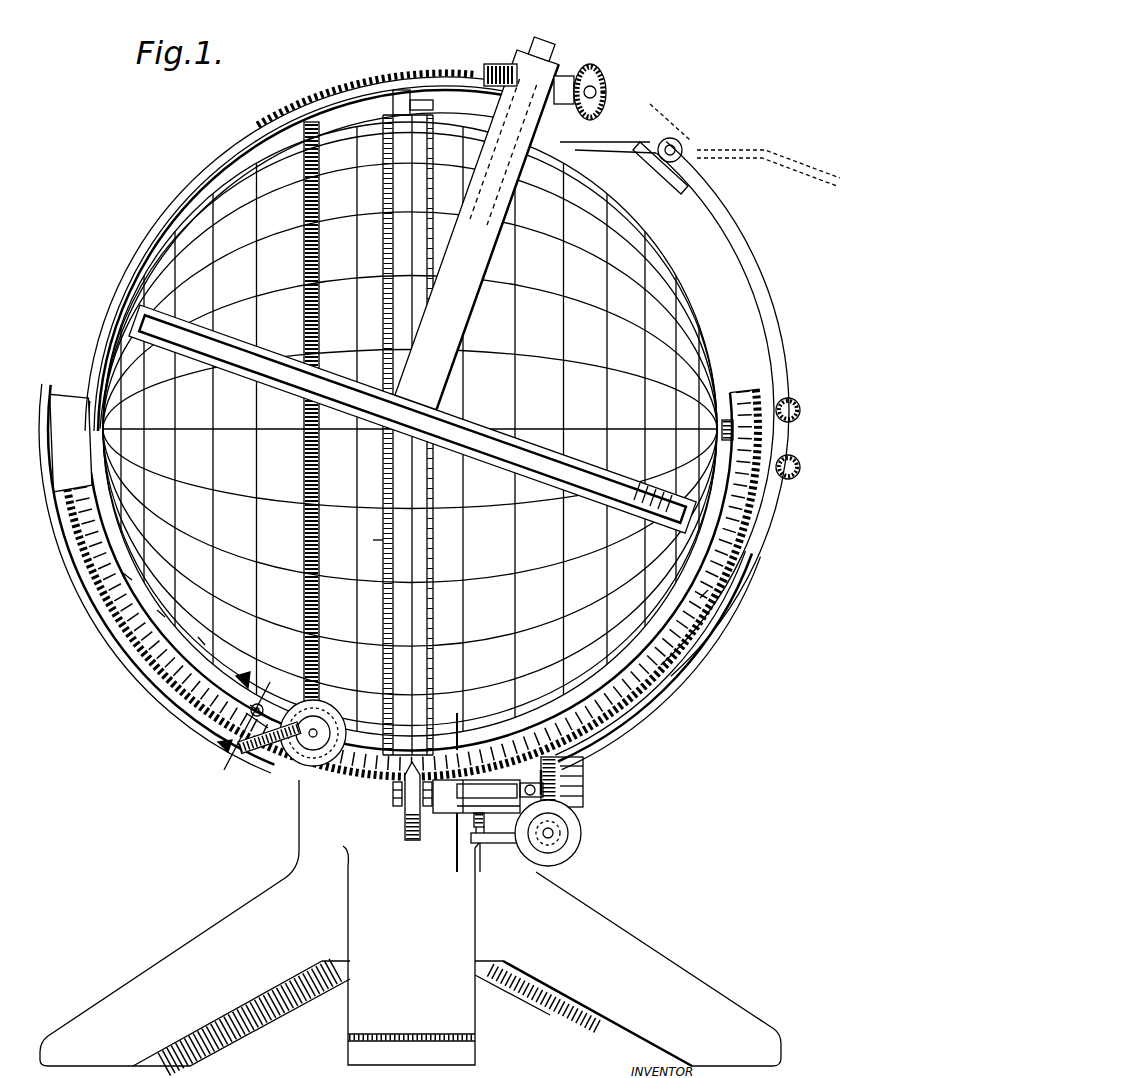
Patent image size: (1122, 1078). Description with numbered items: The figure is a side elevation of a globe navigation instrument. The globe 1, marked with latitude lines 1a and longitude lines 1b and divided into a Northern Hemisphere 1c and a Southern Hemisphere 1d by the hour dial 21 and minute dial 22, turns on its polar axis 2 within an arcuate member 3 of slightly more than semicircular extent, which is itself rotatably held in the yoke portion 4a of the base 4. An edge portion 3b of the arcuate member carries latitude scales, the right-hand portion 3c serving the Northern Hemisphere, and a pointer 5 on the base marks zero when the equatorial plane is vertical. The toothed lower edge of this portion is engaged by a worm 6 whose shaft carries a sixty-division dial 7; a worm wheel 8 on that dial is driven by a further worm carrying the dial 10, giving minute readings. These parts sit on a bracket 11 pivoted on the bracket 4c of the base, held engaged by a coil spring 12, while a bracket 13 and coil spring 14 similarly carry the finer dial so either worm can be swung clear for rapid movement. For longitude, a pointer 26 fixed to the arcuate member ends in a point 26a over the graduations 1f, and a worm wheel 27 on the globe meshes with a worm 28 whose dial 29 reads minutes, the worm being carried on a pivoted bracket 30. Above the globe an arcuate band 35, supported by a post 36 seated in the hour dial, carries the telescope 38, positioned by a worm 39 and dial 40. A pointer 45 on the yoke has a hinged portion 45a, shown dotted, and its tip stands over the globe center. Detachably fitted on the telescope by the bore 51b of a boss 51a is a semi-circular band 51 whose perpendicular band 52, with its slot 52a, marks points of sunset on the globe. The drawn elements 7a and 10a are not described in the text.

The globe 1 is at (748, 510).
The latitude lines 1a is at (123, 573).
The longitude lines 1b is at (157, 610).
The Northern Hemisphere 1c is at (700, 598).
The Southern Hemisphere 1d is at (198, 637).
The graduations 1f is at (373, 540).
The polar axis 2 is at (727, 423).
The arcuate member 3 is at (652, 682).
The outwardly and downwardly extending portion 3b is at (636, 740).
The latitude scale portion / worm wheel 3c is at (630, 720).
The base 4 is at (325, 816).
The yoke portion 4a is at (715, 640).
The bracket 4c is at (490, 862).
The pointer 5 is at (404, 818).
The worm 6 is at (396, 792).
The dial 7 is at (584, 800).
The link 7a is at (583, 824).
The worm wheel 8 is at (597, 765).
The dial 10 is at (452, 746).
The plate 10a is at (484, 850).
The bracket 11 is at (560, 850).
The coil spring 12 is at (482, 800).
The bracket 13 is at (476, 848).
The coil spring 14 is at (471, 826).
The hour dial 21 is at (382, 488).
The minute dial 22 is at (430, 462).
The pointer 26 is at (100, 382).
The point 26a is at (390, 117).
The worm wheel 27 is at (300, 223).
The worm 28 is at (304, 757).
The dial 29 is at (299, 774).
The bracket 30 is at (268, 737).
The arcuate band 35 is at (323, 82).
The supporting post 36 is at (407, 97).
The telescope 38 is at (534, 42).
The worm 39 is at (497, 65).
The dial 40 is at (606, 100).
The pointer 45 is at (747, 282).
The hinged portion 45a is at (612, 142).
The semi-circular band 51 is at (453, 350).
The boss 51a is at (562, 68).
The central bore 51b is at (592, 82).
The semi-circular band 52 is at (556, 464).
The slot 52a is at (567, 495).